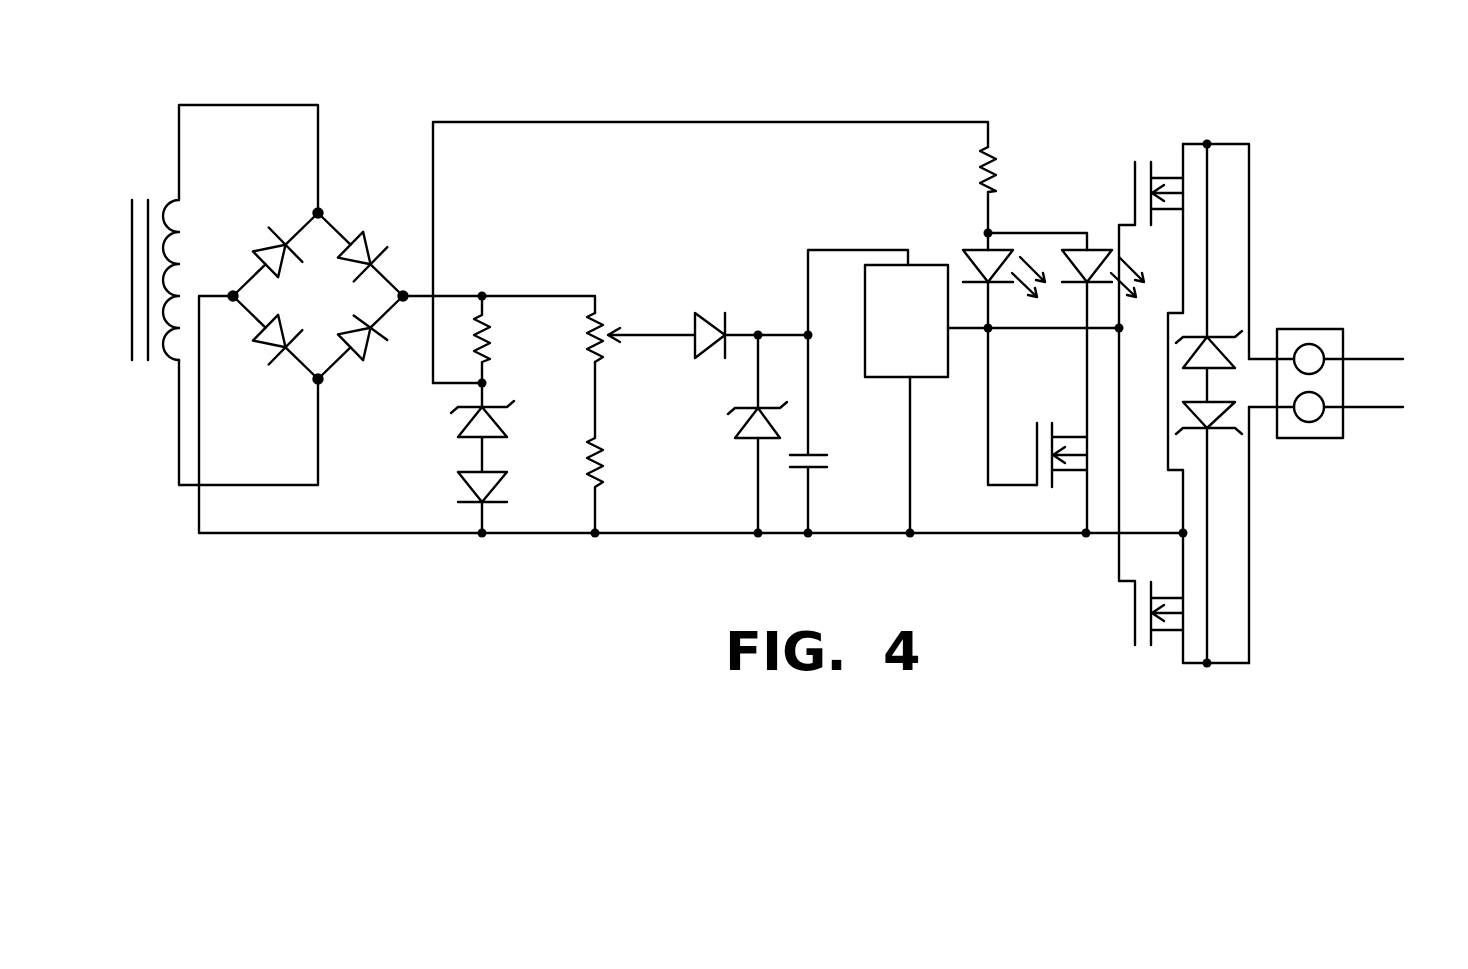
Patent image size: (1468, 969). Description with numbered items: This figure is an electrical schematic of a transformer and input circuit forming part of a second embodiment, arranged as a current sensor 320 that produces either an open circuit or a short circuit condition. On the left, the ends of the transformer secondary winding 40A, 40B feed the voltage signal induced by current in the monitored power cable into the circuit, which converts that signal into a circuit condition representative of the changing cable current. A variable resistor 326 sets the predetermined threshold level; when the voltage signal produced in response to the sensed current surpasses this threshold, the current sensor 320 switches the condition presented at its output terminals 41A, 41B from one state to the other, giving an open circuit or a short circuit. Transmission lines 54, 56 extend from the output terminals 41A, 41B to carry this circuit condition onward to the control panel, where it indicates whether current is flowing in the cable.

The current sensor 320 is at (417, 573).
The variable resistor 326 is at (607, 330).
The secondary winding end 40A is at (180, 128).
The secondary winding end 40B is at (175, 462).
The output terminal 41A is at (1308, 340).
The output terminal 41B is at (1309, 422).
The transmission line 54 is at (1372, 358).
The transmission line 56 is at (1370, 408).